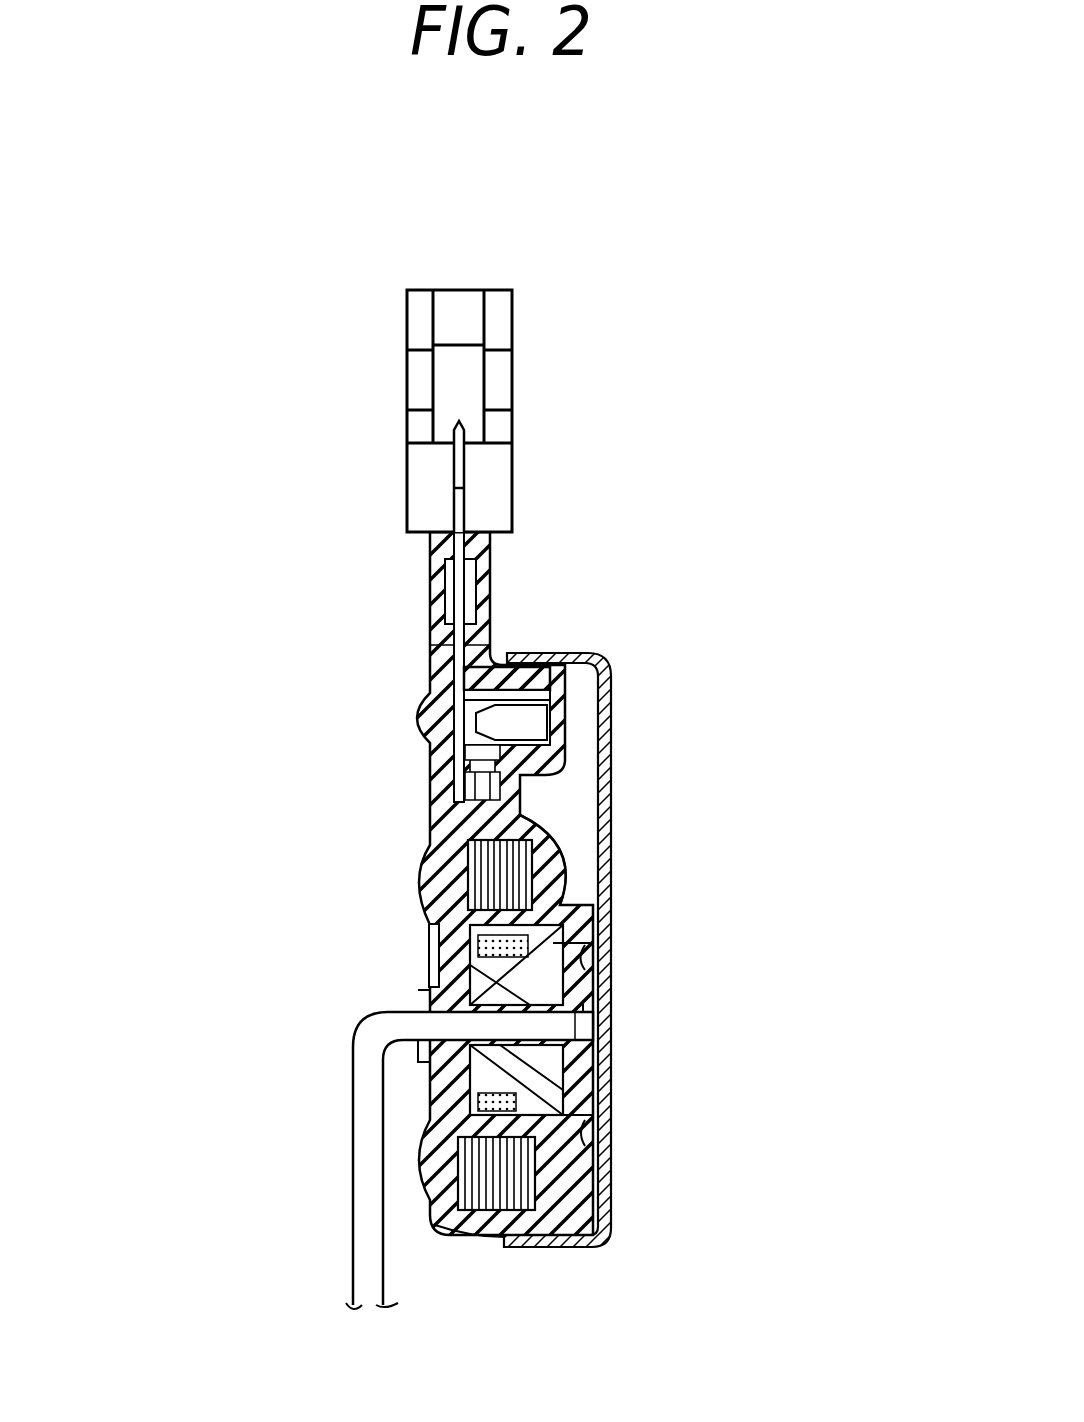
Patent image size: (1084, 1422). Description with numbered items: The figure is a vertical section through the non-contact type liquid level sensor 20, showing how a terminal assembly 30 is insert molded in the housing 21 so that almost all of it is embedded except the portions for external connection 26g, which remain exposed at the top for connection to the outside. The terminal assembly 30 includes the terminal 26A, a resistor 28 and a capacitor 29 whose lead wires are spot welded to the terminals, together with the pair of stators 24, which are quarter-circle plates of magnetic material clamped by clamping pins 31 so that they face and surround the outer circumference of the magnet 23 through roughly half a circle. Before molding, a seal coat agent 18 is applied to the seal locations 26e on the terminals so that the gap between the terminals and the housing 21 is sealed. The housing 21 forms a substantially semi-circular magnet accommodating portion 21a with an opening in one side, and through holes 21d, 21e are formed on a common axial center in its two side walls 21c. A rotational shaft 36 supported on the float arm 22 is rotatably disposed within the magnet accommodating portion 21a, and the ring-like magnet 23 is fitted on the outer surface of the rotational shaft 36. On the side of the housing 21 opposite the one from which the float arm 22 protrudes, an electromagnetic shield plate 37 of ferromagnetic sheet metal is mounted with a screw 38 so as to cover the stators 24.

The seal coat agent 18 is at (500, 556).
The non-contact type liquid level sensor 20 is at (733, 461).
The housing 21 is at (430, 557).
The magnet accommodating portion 21a is at (578, 913).
The side walls 21c is at (433, 946).
The through hole 21d is at (423, 1020).
The through hole 21e is at (568, 1085).
The float arm 22 is at (354, 1250).
The magnet 23 is at (440, 1003).
The stators 24 is at (548, 830).
The terminal 26A is at (470, 598).
The seal locations 26e is at (476, 650).
The portions for external connection 26g is at (456, 497).
The resistor 28 is at (500, 788).
The capacitor 29 is at (558, 706).
The terminal assembly 30 is at (446, 648).
The clamping pins 31 is at (462, 880).
The rotational shaft 36 is at (563, 1079).
The electromagnetic shield plate 37 is at (606, 1192).
The screw 38 is at (605, 932).